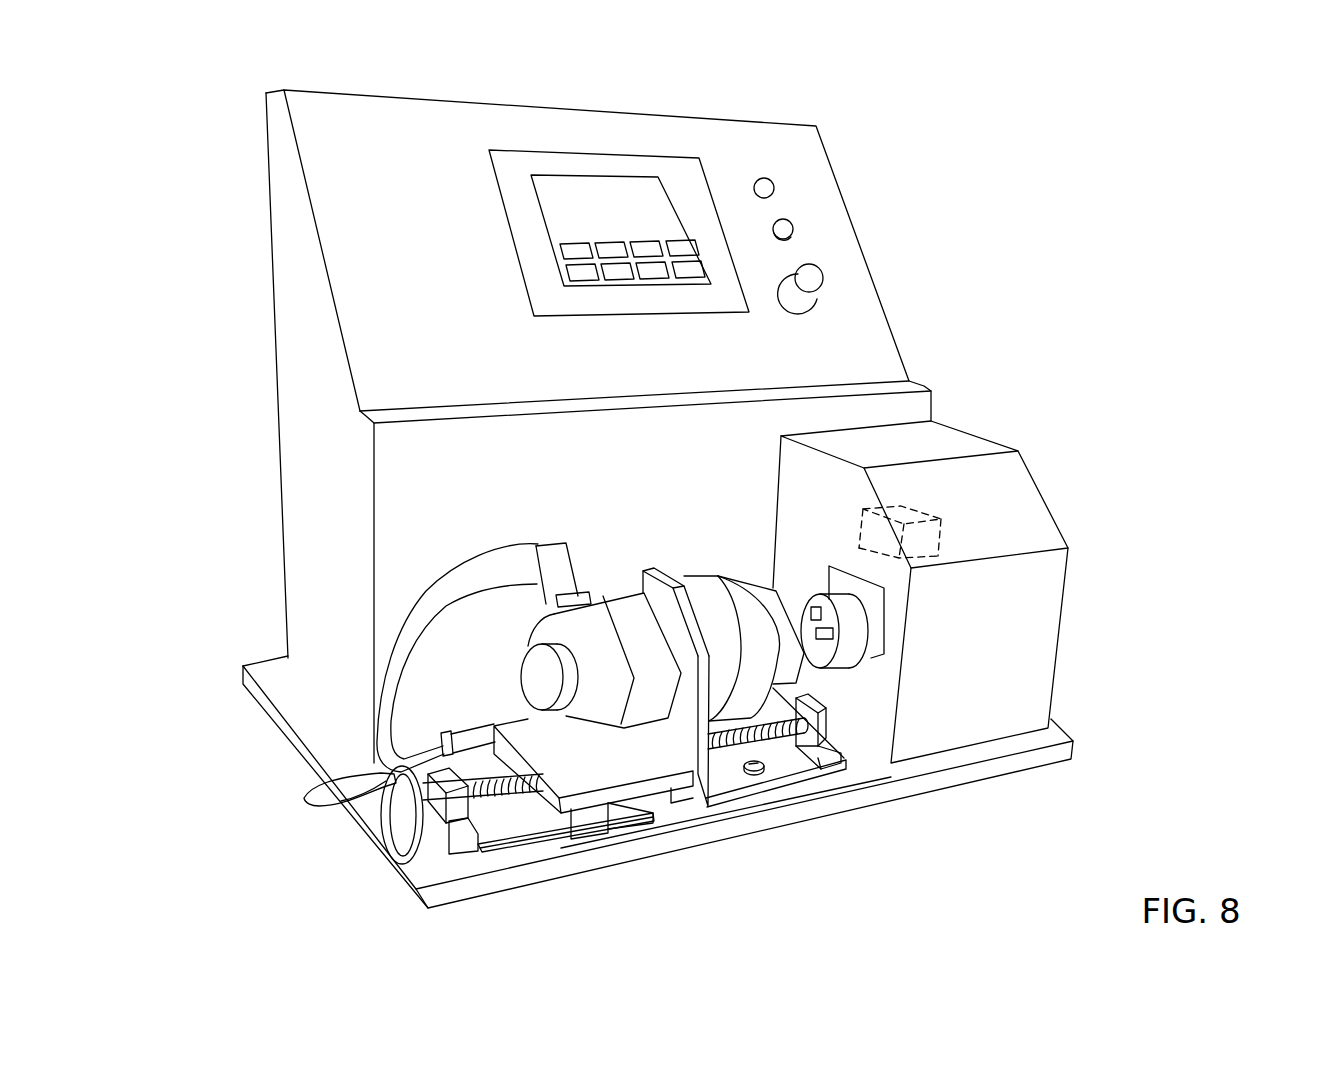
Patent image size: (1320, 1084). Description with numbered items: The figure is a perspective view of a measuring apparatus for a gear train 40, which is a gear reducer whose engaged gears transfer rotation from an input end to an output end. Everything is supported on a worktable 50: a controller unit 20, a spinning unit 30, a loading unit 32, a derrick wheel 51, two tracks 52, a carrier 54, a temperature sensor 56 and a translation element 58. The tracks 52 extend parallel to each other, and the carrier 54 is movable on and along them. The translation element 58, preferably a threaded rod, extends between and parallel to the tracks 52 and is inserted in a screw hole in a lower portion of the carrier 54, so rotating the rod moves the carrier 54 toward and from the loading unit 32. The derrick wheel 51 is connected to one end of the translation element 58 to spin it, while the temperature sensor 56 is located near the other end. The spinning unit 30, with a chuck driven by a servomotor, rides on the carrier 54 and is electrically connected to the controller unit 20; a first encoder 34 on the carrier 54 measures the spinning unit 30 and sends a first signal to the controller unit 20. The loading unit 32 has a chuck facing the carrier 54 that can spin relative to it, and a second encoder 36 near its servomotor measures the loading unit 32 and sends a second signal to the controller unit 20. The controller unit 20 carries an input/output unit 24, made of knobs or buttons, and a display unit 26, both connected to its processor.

The controller unit 20 is at (288, 515).
The input/output unit 24 is at (643, 252).
The display unit 26 is at (632, 190).
The spinning unit 30 is at (632, 620).
The loading unit 32 is at (848, 622).
The first encoder 34 is at (547, 678).
The second encoder 36 is at (913, 508).
The gear train 40 is at (783, 660).
The worktable 50 is at (895, 790).
The derrick wheel 51 is at (327, 790).
The tracks 52 is at (530, 852).
The carrier 54 is at (630, 787).
The temperature sensor 56 is at (763, 762).
The translation element 58 is at (473, 795).